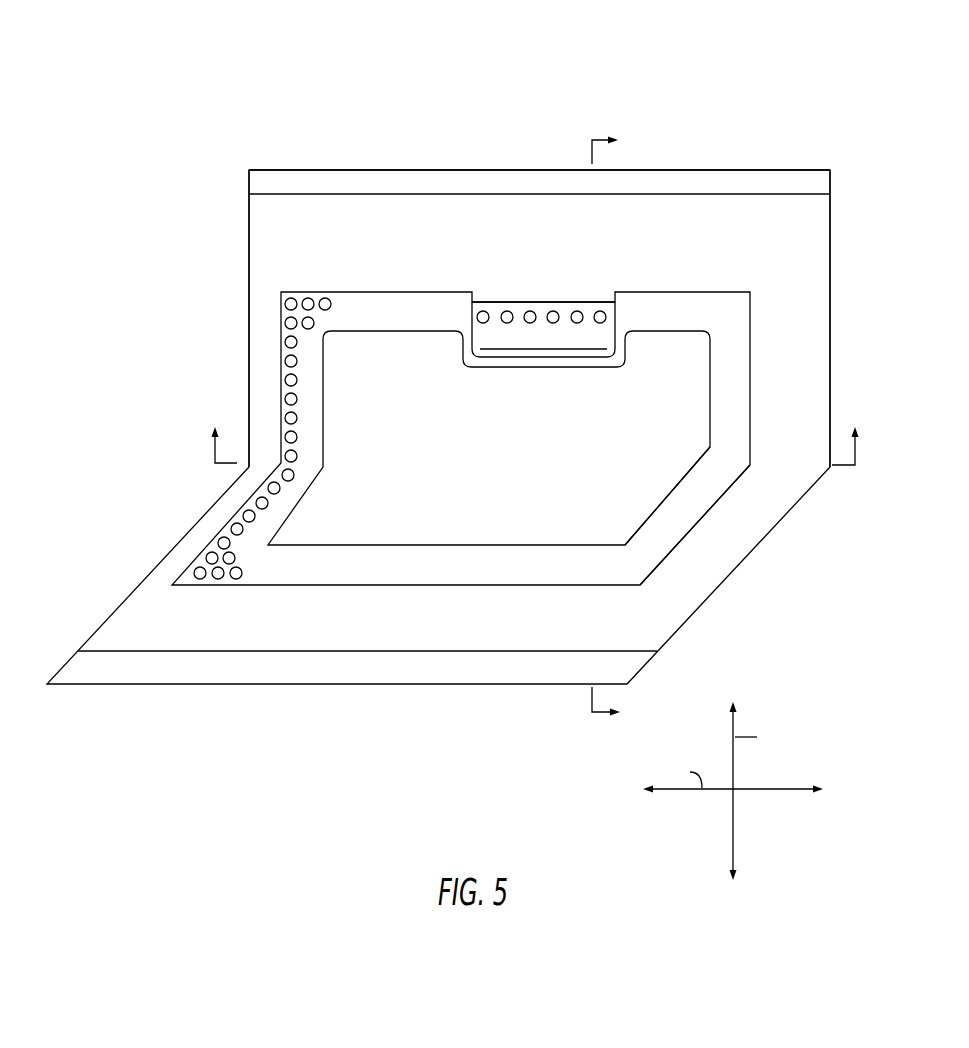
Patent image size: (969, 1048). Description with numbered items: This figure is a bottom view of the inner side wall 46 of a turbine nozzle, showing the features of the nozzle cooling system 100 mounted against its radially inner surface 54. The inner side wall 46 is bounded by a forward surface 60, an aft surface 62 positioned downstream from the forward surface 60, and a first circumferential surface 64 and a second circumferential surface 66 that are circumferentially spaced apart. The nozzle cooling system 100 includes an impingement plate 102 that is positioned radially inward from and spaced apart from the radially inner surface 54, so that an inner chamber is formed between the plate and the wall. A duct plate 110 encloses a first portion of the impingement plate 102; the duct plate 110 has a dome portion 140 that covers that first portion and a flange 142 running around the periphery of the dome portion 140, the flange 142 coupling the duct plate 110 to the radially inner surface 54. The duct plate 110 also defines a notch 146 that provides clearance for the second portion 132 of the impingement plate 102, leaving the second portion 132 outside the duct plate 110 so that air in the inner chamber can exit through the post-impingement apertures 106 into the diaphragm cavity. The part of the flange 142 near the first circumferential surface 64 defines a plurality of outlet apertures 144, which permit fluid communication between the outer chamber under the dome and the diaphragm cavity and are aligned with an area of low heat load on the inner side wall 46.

The inner side wall 46 is at (204, 118).
The radially inner surface 54 is at (312, 233).
The forward surface 60 is at (362, 170).
The aft surface 62 is at (356, 684).
The first circumferential surface 64 is at (249, 226).
The second circumferential surface 66 is at (832, 300).
The nozzle cooling system 100 is at (662, 578).
The impingement plate 102 is at (512, 278).
The post-impingement apertures 106 is at (507, 311).
The duct plate 110 is at (738, 487).
The second portion 132 is at (565, 313).
The dome portion 140 is at (681, 365).
The flange 142 is at (687, 505).
The outlet apertures 144 is at (285, 399).
The notch 146 is at (541, 345).